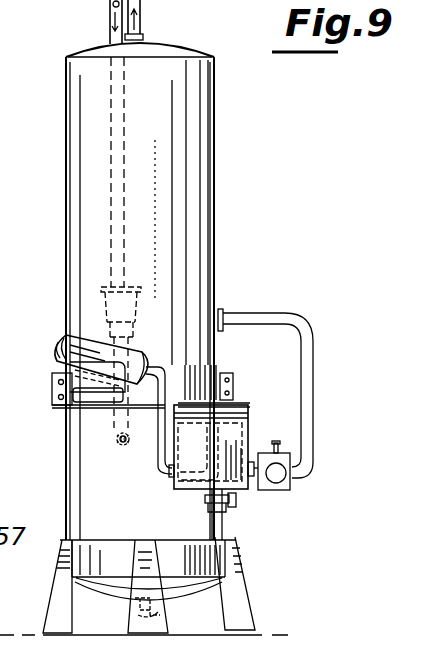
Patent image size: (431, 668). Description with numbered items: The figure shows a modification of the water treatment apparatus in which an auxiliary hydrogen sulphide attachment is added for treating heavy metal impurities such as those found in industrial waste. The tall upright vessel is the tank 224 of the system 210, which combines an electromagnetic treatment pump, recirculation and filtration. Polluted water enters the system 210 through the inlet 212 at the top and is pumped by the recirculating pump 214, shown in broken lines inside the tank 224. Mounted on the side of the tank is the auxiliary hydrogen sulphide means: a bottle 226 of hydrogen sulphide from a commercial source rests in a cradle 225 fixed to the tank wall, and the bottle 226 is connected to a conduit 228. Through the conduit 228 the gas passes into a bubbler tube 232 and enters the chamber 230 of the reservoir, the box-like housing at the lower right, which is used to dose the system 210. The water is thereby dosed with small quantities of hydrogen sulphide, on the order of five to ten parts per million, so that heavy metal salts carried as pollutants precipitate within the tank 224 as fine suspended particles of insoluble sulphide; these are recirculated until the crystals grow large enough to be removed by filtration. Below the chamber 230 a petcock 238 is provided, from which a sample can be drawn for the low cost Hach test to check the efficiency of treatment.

The system 210 is at (222, 135).
The inlet 212 is at (110, 34).
The recirculating pump 214 is at (105, 284).
The tank 224 is at (80, 157).
The cradle 225 is at (66, 341).
The bottle 226 is at (112, 338).
The conduit 228 is at (152, 457).
The chamber 230 is at (177, 496).
The bubbler tube 232 is at (236, 434).
The petcock 238 is at (226, 508).